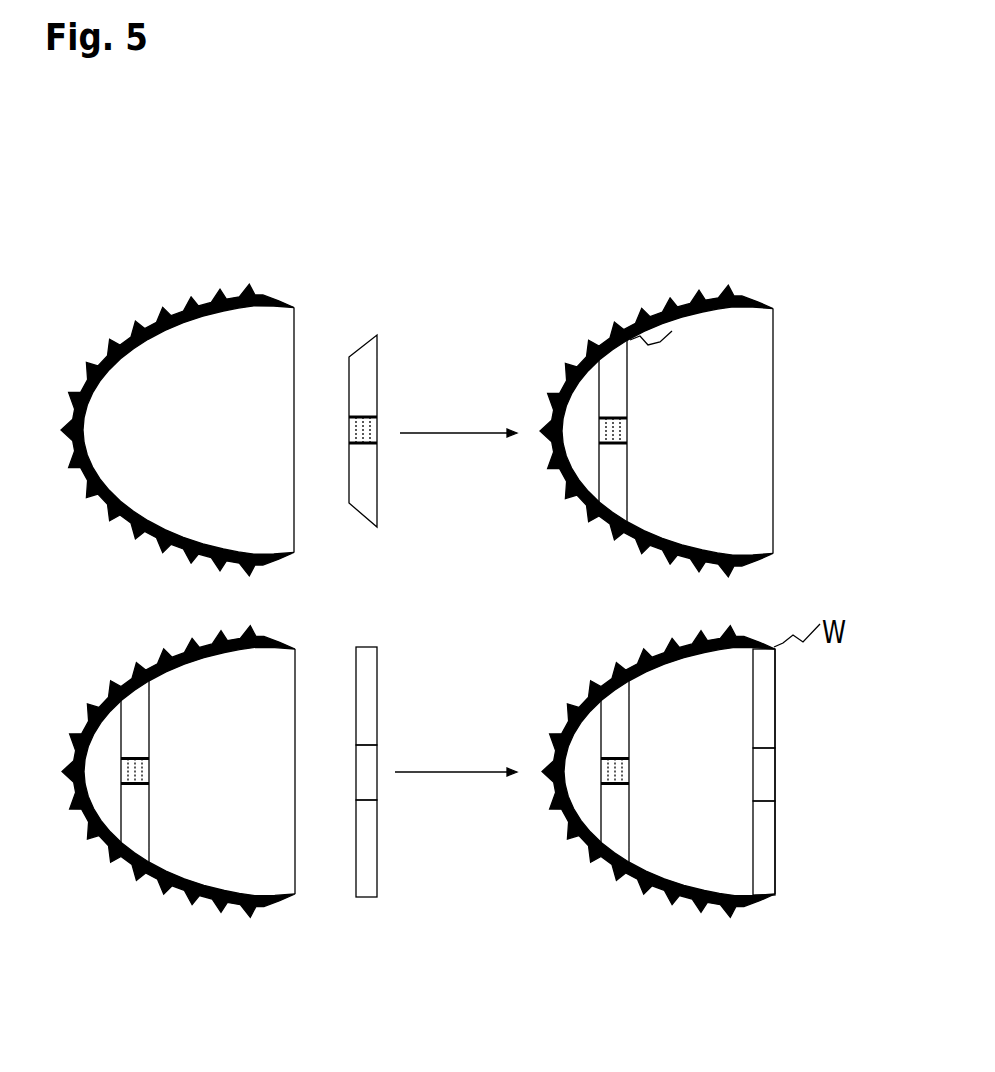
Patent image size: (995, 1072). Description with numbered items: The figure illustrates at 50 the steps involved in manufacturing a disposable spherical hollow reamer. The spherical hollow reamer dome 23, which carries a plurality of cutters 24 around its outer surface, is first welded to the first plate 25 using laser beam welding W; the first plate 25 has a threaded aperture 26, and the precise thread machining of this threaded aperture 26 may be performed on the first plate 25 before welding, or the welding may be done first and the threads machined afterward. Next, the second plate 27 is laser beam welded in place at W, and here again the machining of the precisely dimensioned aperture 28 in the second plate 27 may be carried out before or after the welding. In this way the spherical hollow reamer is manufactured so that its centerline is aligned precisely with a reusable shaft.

The spherical hollow reamer dome 23 is at (177, 389).
The cutters 24 is at (177, 389).
The first plate 25 is at (399, 400).
The threaded aperture 26 is at (399, 410).
The second plate 27 is at (405, 696).
The precisely dimensioned aperture 28 is at (403, 848).
The steps involved in the manufacture of the spherical hollow reamer 50 is at (656, 342).
The laser beam welding W is at (665, 331).